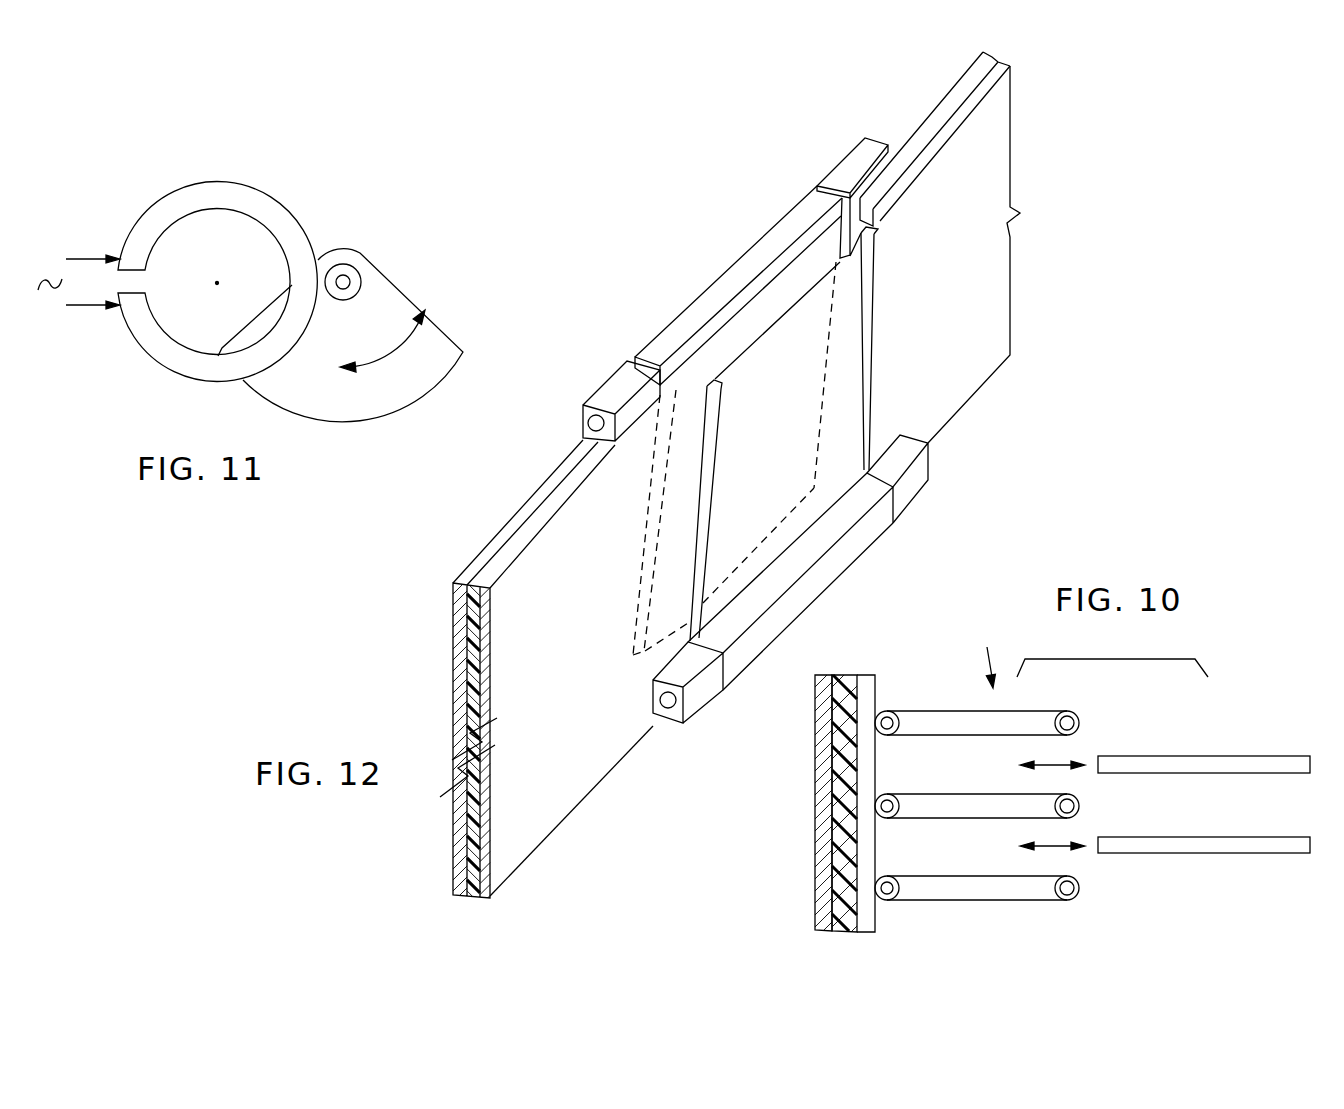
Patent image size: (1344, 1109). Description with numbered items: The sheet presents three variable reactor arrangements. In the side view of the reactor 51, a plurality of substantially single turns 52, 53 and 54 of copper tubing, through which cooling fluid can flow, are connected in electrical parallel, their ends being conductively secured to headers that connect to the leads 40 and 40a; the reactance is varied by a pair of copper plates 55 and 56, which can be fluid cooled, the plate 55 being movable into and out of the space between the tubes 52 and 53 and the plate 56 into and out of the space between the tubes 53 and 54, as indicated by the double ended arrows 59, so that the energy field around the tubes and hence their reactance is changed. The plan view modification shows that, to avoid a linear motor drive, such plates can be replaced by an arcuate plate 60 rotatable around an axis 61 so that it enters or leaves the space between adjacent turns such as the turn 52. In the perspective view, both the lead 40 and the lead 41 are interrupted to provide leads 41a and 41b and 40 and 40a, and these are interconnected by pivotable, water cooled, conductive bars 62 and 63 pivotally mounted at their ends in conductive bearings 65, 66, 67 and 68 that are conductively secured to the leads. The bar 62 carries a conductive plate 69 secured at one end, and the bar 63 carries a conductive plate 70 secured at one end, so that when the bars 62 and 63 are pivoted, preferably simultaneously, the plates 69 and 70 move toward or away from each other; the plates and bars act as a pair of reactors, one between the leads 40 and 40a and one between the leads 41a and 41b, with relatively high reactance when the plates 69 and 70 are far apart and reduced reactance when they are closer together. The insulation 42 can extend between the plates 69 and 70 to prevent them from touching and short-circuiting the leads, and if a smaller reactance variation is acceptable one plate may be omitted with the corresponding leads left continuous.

In FIG. 12, the lead 40 is at (586, 796).
In FIG. 12, the lead 40a is at (962, 407).
In FIG. 10, the lead 40a is at (867, 697).
In FIG. 10, the lead 41 is at (827, 685).
In FIG. 12, the lead 41a is at (507, 523).
In FIG. 12, the lead 41b is at (910, 124).
In FIG. 12, the insulation 42 is at (472, 667).
In FIG. 10, the insulation 42 is at (848, 680).
In FIG. 10, the reactor 51 is at (1089, 653).
In FIG. 11, the turn of copper tubing 52 is at (292, 227).
In FIG. 10, the turn of copper tubing 52 is at (1037, 715).
In FIG. 10, the turn of copper tubing 53 is at (978, 800).
In FIG. 10, the turn of copper tubing 54 is at (978, 890).
In FIG. 10, the copper plate 55 is at (1263, 760).
In FIG. 10, the copper plate 56 is at (1262, 843).
In FIG. 10, the double ended arrows 59 is at (1050, 763).
In FIG. 11, the arcuate plate 60 is at (407, 395).
In FIG. 11, the axis 61 is at (346, 284).
In FIG. 12, the conductive bar 62 is at (822, 575).
In FIG. 12, the conductive bar 63 is at (719, 288).
In FIG. 12, the conductive bearing 65 is at (700, 697).
In FIG. 12, the conductive bearing 66 is at (915, 493).
In FIG. 12, the conductive bearing 67 is at (618, 390).
In FIG. 12, the conductive bearing 68 is at (838, 170).
In FIG. 12, the conductive plate 69 is at (860, 342).
In FIG. 12, the conductive plate 70 is at (720, 347).